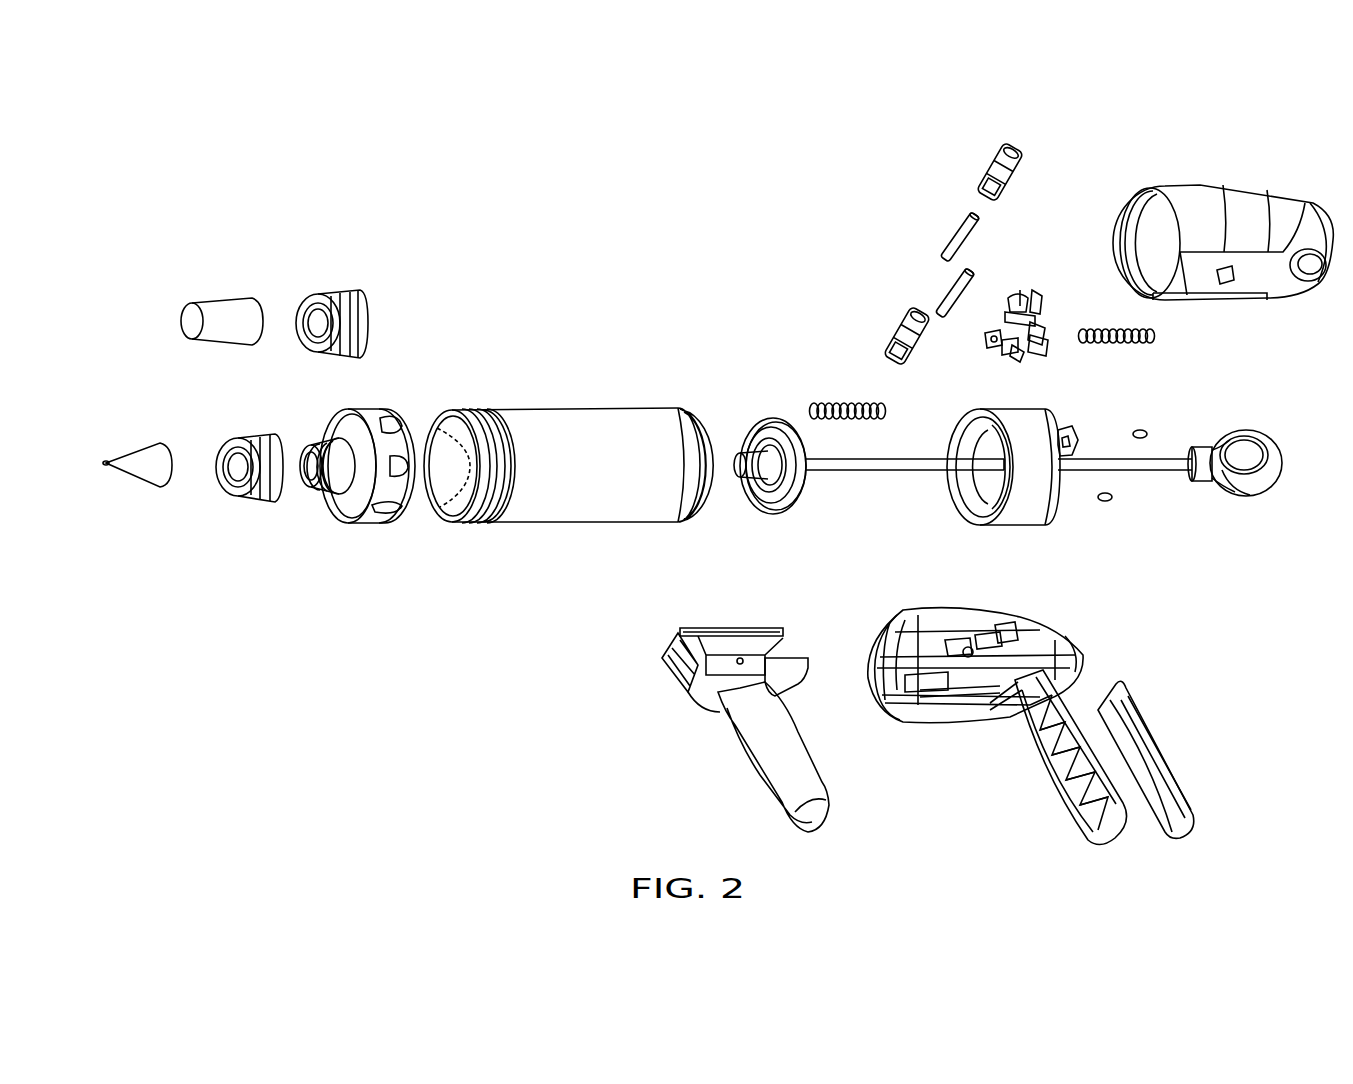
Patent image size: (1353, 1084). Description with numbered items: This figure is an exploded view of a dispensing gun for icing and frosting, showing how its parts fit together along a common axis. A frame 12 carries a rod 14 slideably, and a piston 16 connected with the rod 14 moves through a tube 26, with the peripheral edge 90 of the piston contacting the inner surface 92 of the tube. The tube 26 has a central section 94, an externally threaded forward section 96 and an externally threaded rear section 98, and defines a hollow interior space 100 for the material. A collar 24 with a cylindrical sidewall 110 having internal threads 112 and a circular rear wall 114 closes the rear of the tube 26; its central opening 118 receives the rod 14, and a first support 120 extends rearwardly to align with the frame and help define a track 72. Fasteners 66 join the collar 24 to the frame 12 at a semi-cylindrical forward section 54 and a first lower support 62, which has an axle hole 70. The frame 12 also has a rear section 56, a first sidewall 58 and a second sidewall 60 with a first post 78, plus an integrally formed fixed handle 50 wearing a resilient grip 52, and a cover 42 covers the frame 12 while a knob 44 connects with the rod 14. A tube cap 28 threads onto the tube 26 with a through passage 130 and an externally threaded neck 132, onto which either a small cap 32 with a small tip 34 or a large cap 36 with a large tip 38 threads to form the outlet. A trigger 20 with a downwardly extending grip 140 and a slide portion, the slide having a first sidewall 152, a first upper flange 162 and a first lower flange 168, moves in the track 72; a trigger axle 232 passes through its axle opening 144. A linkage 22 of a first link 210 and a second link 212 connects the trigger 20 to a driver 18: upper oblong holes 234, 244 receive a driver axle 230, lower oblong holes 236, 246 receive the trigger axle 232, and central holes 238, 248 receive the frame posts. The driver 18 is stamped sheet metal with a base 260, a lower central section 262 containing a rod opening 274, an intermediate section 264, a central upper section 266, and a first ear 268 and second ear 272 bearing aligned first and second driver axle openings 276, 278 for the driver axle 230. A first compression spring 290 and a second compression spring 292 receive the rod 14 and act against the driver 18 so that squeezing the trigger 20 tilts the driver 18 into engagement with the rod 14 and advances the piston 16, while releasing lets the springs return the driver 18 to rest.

The frame 12 is at (993, 663).
The rod 14 is at (880, 472).
The piston 16 is at (785, 512).
The driver 18 is at (1017, 305).
The trigger 20 is at (739, 693).
The linkage 22 is at (913, 225).
The collar 24 is at (984, 482).
The tube 26 is at (563, 446).
The tube cap 28 is at (348, 490).
The first (small) cap 32 is at (238, 522).
The first (small) tip 34 is at (128, 500).
The second (large) cap 36 is at (355, 262).
The second (large) tip 38 is at (225, 280).
The cover 42 is at (1255, 155).
The knob 44 is at (1282, 458).
The fixed handle 50 is at (1060, 805).
The grip 52 is at (1178, 775).
The forward section 54 is at (890, 623).
The rear section 56 is at (1080, 650).
The first sidewall 58 is at (975, 635).
The second sidewall 60 is at (930, 692).
The first lower support 62 is at (952, 656).
The fasteners 66 is at (1138, 430).
The axle hole 70 is at (1000, 630).
The track 72 is at (920, 680).
The first post 78 is at (964, 648).
The peripheral edge 90 is at (772, 465).
The inner surface 92 is at (460, 510).
The central section 94 is at (566, 515).
The forward section 96 is at (478, 412).
The rear section 98 is at (690, 410).
The hollow interior space 100 is at (462, 452).
The cylindrical sidewall 110 is at (985, 410).
The internal threads 112 is at (950, 437).
The rear wall 114 is at (1005, 433).
The central opening 118 is at (953, 505).
The first support 120 is at (1066, 430).
The through passage 130 is at (312, 484).
The neck 132 is at (328, 432).
The grip 140 is at (780, 778).
The axle opening 144 is at (770, 634).
The first sidewall 152 is at (700, 645).
The first upper flange 162 is at (746, 612).
The first lower flange 168 is at (797, 660).
The first link 210 is at (994, 181).
The second link 212 is at (894, 368).
The driver axle 230 is at (958, 235).
The trigger axle 232 is at (948, 292).
The upper oblong hole 234 is at (1015, 148).
The lower oblong hole 236 is at (996, 205).
The central hole 238 is at (1018, 168).
The upper oblong hole 244 is at (922, 335).
The lower oblong hole 246 is at (892, 355).
The central hole 248 is at (915, 360).
The base 260 is at (1040, 340).
The lower central section 262 is at (1038, 325).
The intermediate section 264 is at (1005, 318).
The central upper section 266 is at (1010, 305).
The first ear 268 is at (1038, 293).
The second ear 272 is at (1005, 345).
The rod opening 274 is at (1015, 350).
The first driver axle opening 276 is at (1020, 290).
The second driver axle opening 278 is at (985, 338).
The first compression spring 290 is at (858, 420).
The second compression spring 292 is at (1128, 345).